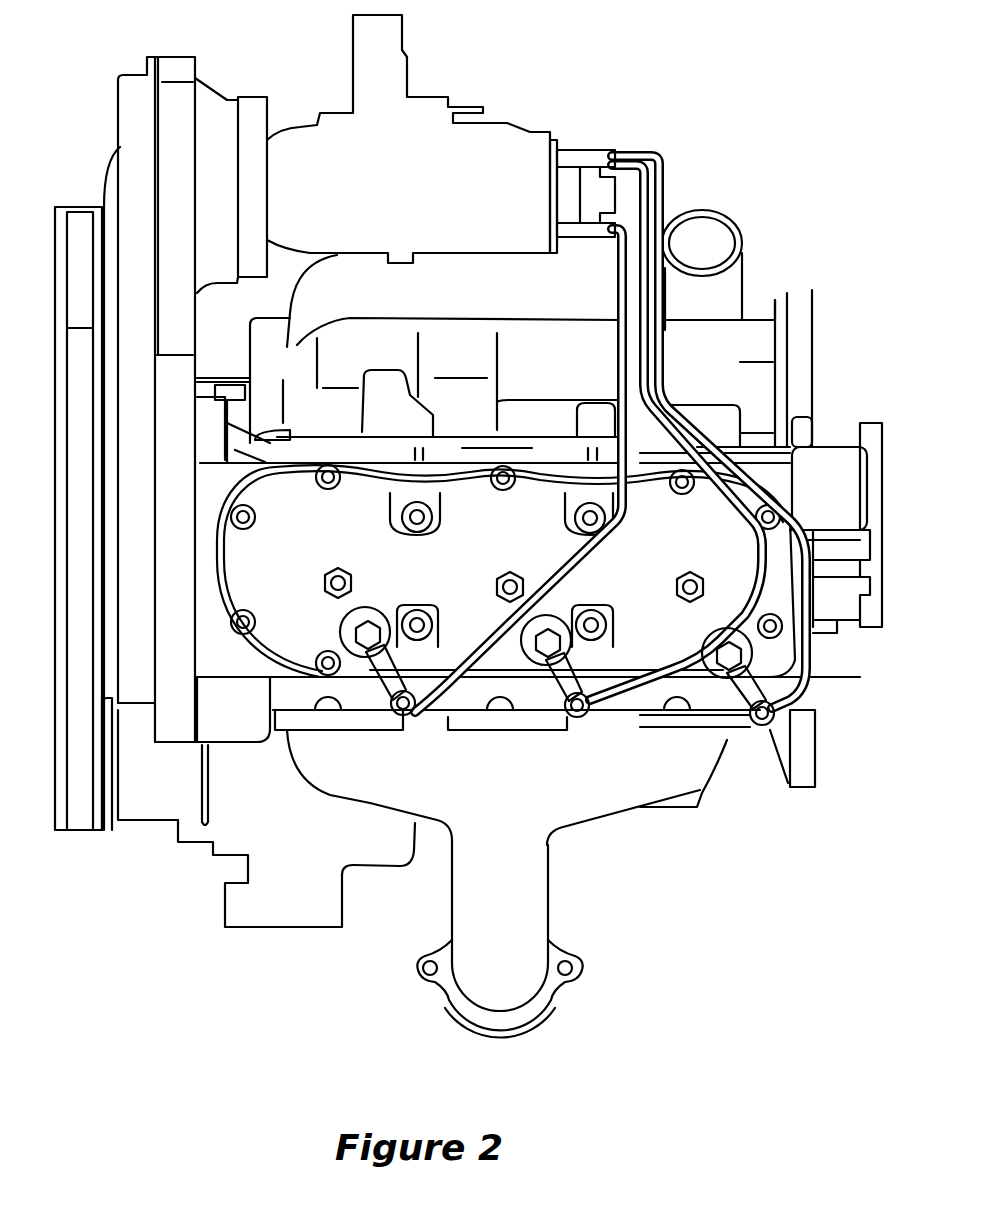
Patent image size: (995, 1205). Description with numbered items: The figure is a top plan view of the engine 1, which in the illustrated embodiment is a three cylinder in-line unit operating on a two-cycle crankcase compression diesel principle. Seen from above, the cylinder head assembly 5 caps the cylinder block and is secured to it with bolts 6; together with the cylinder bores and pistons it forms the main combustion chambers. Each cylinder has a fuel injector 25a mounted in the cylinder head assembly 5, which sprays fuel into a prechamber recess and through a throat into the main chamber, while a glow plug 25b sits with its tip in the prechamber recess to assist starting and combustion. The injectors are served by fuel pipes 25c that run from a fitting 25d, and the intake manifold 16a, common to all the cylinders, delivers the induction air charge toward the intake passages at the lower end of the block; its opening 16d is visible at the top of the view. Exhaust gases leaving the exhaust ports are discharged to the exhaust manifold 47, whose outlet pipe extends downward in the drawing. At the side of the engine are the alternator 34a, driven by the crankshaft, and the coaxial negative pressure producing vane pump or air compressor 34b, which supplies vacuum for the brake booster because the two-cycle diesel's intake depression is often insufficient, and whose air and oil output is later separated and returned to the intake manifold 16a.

The engine 1 is at (750, 88).
The cylinder head assembly 5 is at (640, 663).
The bolts 6 is at (417, 533).
The intake manifold 16a is at (718, 293).
The intake pipe opening 16d is at (687, 227).
The fuel injector 25a is at (377, 690).
The glow plug 25b is at (337, 581).
The fuel pipe 25c is at (655, 385).
The fuel pipe fitting 25d is at (530, 133).
The alternator 34a is at (383, 867).
The air compressor 34b is at (140, 822).
The exhaust manifold 47 is at (548, 897).